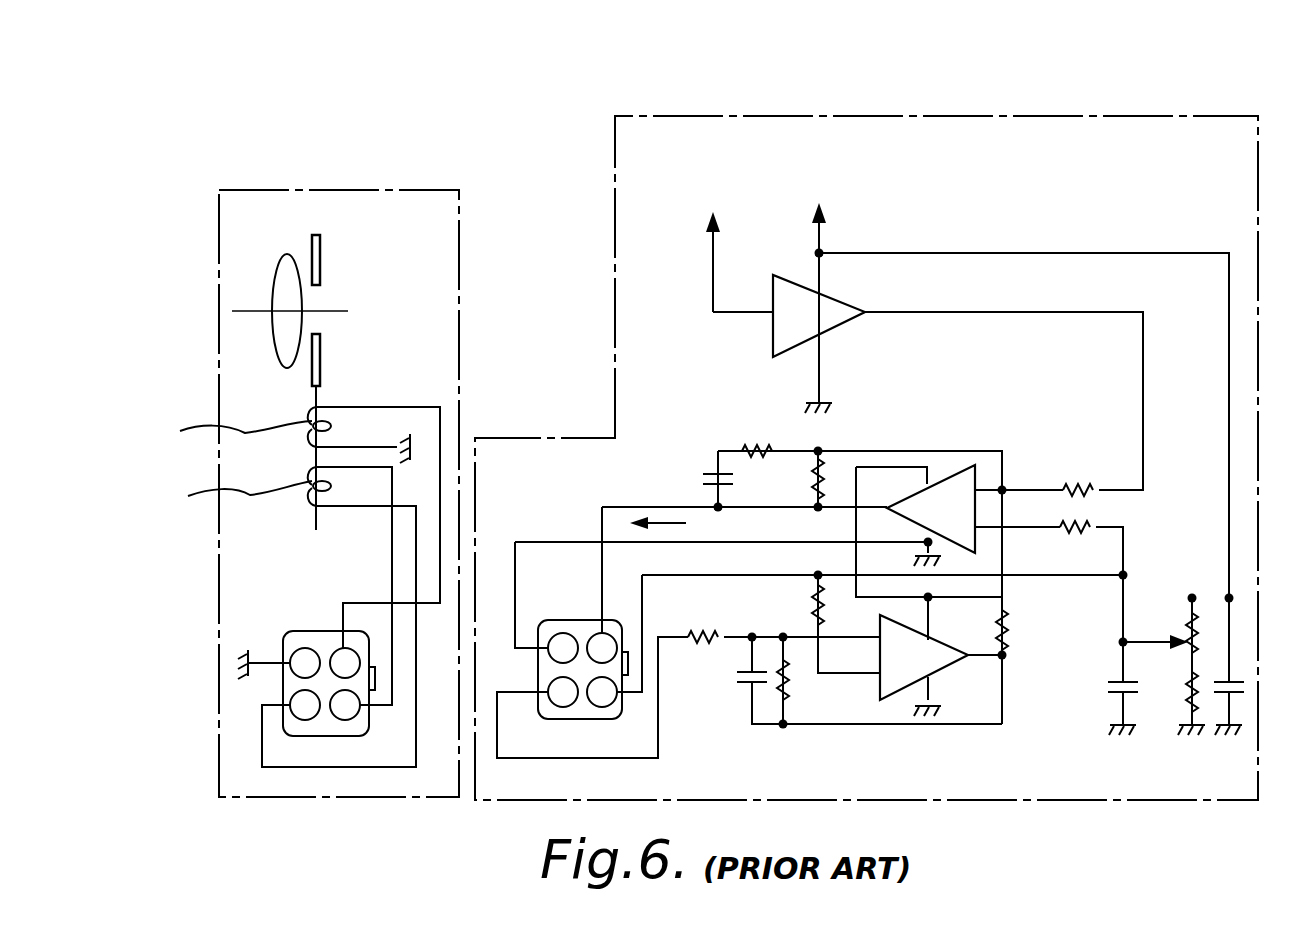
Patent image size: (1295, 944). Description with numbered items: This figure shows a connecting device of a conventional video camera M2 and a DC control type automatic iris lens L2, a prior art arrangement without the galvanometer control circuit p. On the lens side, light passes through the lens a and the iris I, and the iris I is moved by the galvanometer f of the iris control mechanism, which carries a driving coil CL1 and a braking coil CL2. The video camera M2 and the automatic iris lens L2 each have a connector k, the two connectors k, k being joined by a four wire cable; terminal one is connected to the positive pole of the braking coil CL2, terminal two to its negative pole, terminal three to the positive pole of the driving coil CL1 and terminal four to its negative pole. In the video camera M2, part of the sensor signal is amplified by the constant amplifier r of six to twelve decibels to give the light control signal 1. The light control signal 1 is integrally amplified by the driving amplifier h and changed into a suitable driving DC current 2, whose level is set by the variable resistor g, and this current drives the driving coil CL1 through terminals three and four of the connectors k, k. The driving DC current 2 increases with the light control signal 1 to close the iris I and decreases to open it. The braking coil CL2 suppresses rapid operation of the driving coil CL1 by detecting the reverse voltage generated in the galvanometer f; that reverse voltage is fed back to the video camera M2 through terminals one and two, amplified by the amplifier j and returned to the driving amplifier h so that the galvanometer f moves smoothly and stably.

The DC control type automatic iris lens L2 is at (292, 190).
The video camera M2 is at (868, 116).
The lens a is at (283, 254).
The iris I is at (324, 258).
The galvanometer f is at (384, 402).
The driving coil CL1 is at (220, 426).
The braking coil CL2 is at (220, 490).
The connector k is at (322, 632).
The constant amplifier r is at (784, 325).
The light control signal 1 is at (1150, 392).
The driving DC current 2 is at (674, 506).
The driving amplifier h is at (944, 468).
The amplifier j is at (935, 660).
The galvanometer control circuit p is at (898, 730).
The variable resistor g is at (1178, 672).